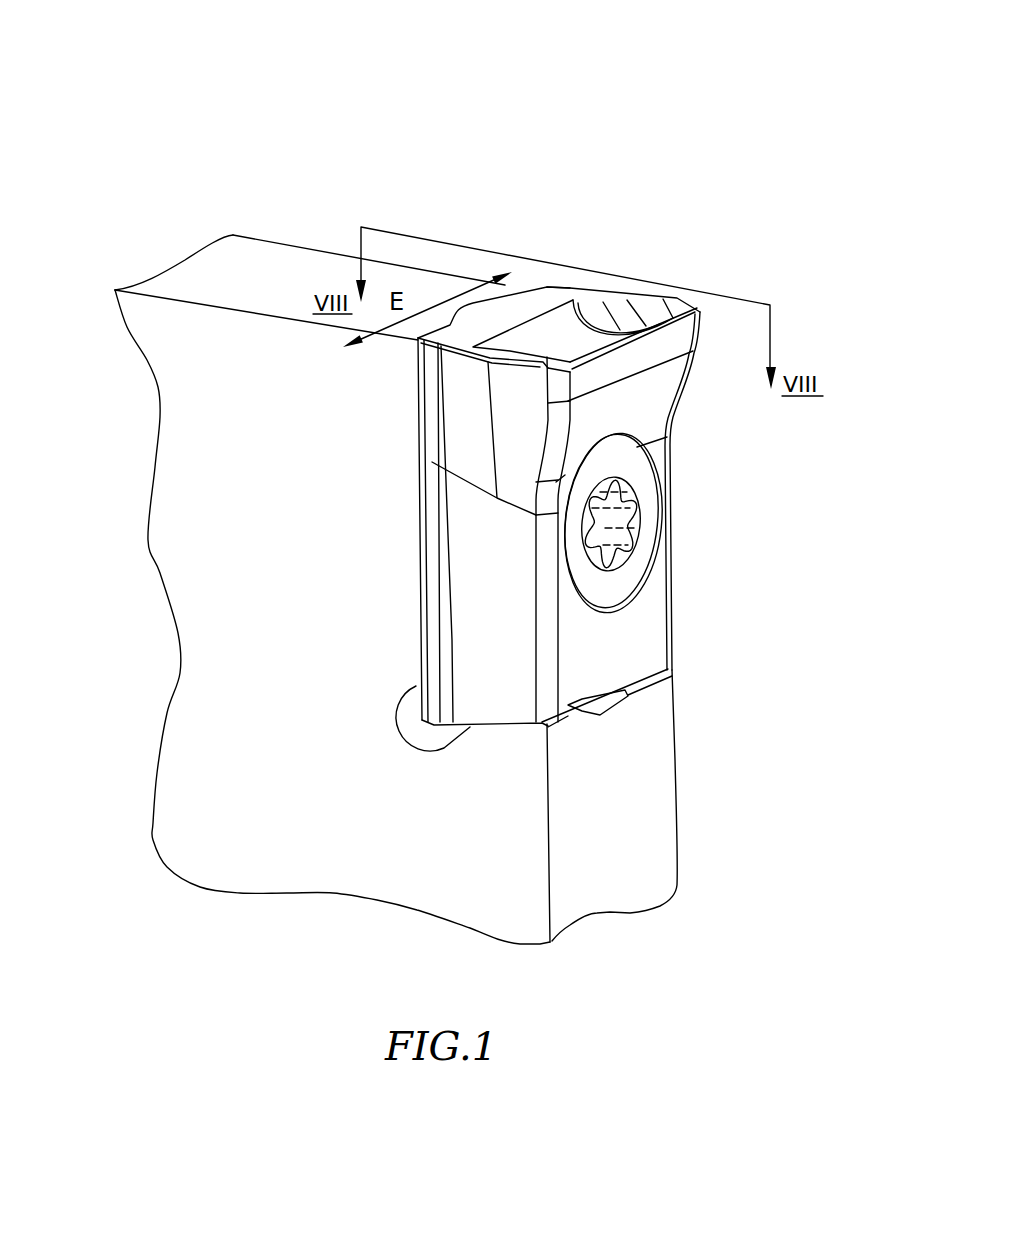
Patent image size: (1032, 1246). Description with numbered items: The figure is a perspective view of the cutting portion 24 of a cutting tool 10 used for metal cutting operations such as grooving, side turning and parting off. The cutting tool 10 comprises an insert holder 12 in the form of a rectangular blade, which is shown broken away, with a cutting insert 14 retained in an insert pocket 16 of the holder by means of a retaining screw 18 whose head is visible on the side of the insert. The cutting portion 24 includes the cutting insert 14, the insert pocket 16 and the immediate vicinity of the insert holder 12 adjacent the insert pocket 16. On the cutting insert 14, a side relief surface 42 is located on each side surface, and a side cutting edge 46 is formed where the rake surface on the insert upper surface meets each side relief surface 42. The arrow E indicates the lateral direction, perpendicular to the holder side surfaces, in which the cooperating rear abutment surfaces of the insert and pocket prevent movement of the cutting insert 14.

The cutting tool 10 is at (552, 133).
The insert holder 12 is at (250, 288).
The cutting insert 14 is at (529, 435).
The insert pocket 16 is at (422, 730).
The retaining screw 18 is at (552, 470).
The cutting portion 24 is at (583, 240).
The side relief surface 42 is at (513, 415).
The side cutting edge 46 is at (511, 364).